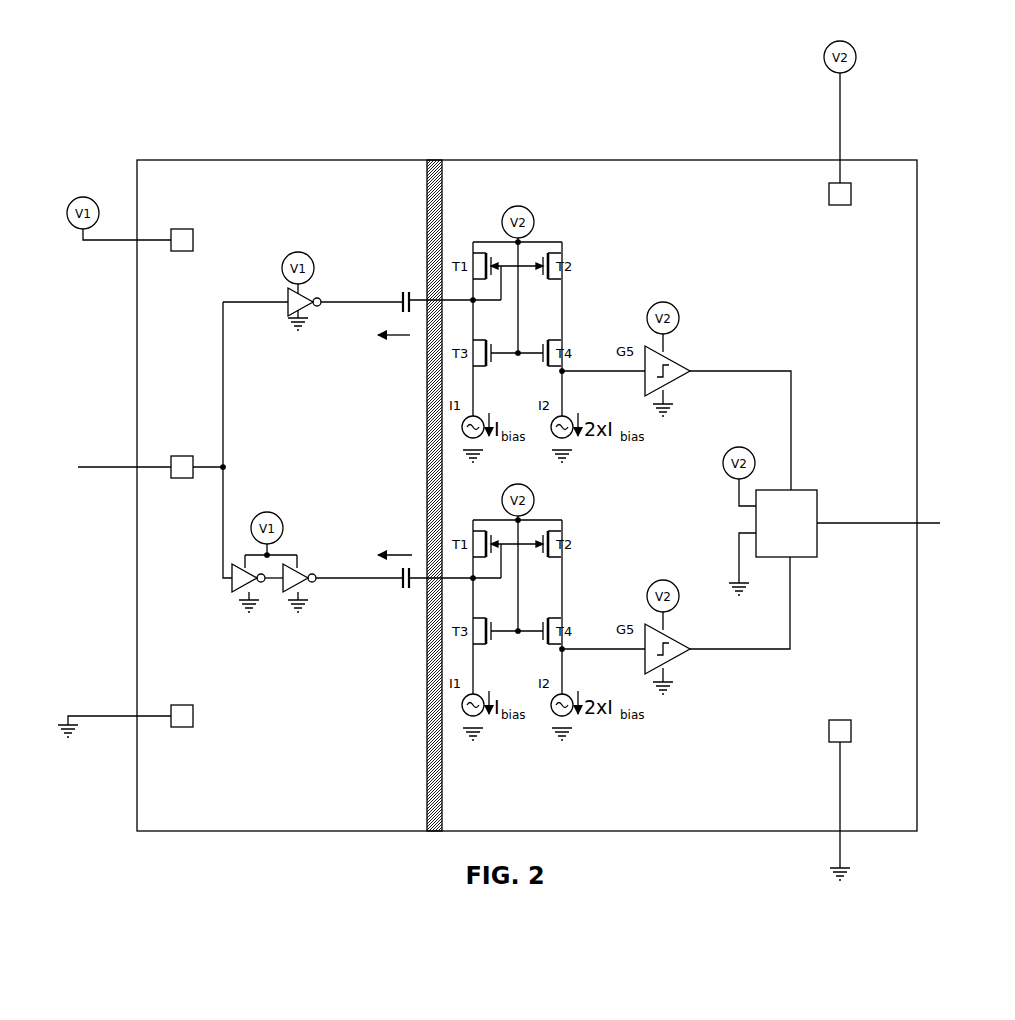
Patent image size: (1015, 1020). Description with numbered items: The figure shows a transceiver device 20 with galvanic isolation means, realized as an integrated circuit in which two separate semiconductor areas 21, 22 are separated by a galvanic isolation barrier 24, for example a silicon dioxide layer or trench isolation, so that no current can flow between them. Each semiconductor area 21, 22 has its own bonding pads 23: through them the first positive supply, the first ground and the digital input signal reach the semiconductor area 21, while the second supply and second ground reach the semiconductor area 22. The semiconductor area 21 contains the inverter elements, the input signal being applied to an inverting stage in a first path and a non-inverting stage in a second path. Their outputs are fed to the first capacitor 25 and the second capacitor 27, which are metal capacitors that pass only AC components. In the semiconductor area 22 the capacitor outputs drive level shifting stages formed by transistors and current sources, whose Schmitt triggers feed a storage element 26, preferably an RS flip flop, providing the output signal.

The transceiver device 20 is at (133, 158).
The semiconductor area 21 is at (288, 178).
The semiconductor area 22 is at (645, 178).
The bonding pads 23 is at (171, 252).
The galvanic isolation barrier 24 is at (436, 170).
The capacitor C1 25 is at (400, 290).
The storage element 26 is at (821, 560).
The capacitor C2 27 is at (398, 597).